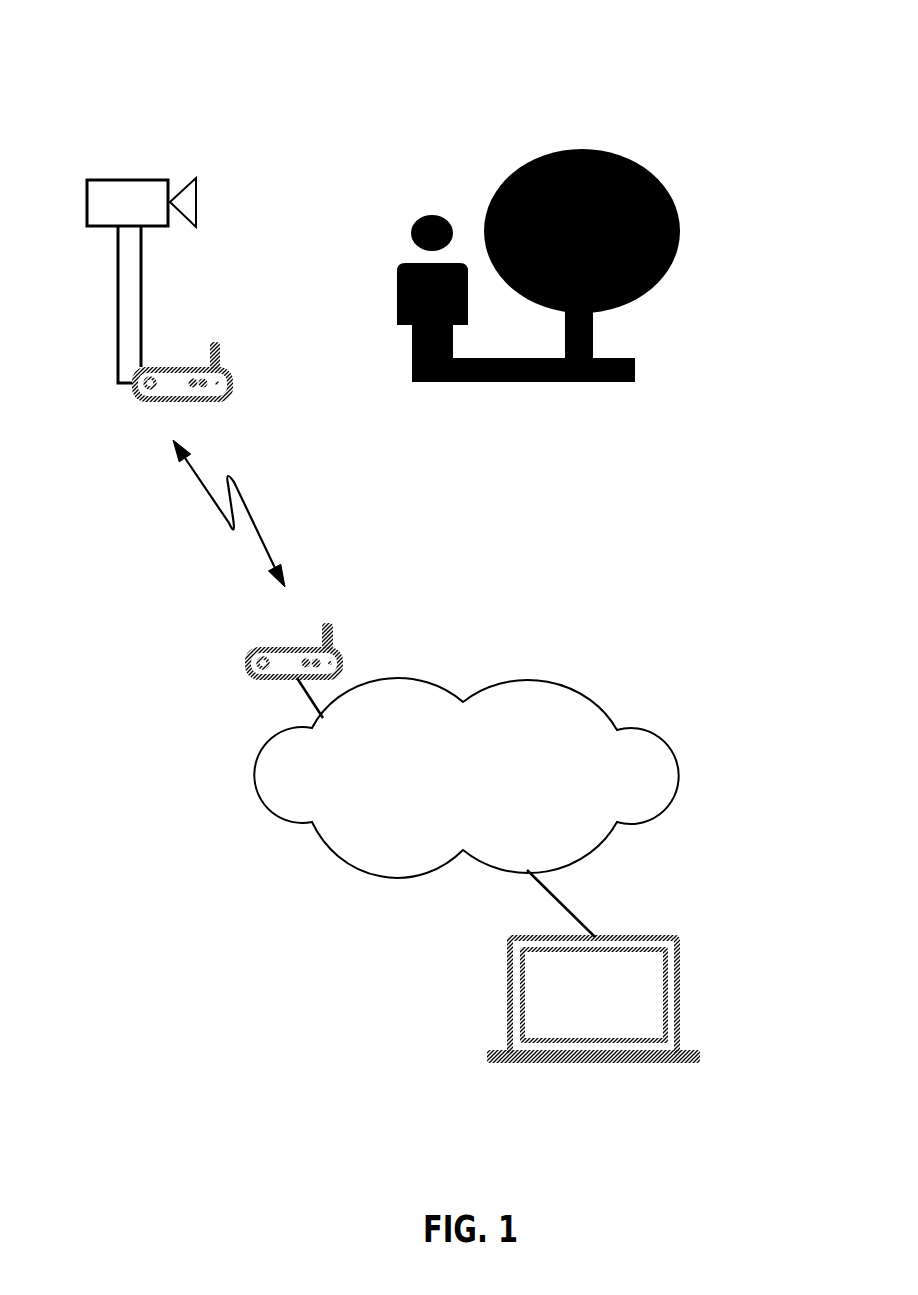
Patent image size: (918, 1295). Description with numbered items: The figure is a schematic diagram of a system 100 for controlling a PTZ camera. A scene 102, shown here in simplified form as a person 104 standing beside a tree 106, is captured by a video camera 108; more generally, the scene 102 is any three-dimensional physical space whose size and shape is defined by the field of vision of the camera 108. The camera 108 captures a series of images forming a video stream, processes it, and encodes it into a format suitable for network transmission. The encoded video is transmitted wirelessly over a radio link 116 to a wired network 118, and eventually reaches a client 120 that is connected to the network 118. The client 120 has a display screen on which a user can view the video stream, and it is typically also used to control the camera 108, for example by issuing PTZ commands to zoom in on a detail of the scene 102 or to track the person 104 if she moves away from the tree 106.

The system 100 is at (60, 32).
The scene 102 is at (718, 138).
The person 104 is at (403, 270).
The tree 106 is at (665, 277).
The video camera 108 is at (128, 177).
The radio link 116 is at (155, 583).
The wired network 118 is at (532, 790).
The client 120 is at (698, 982).